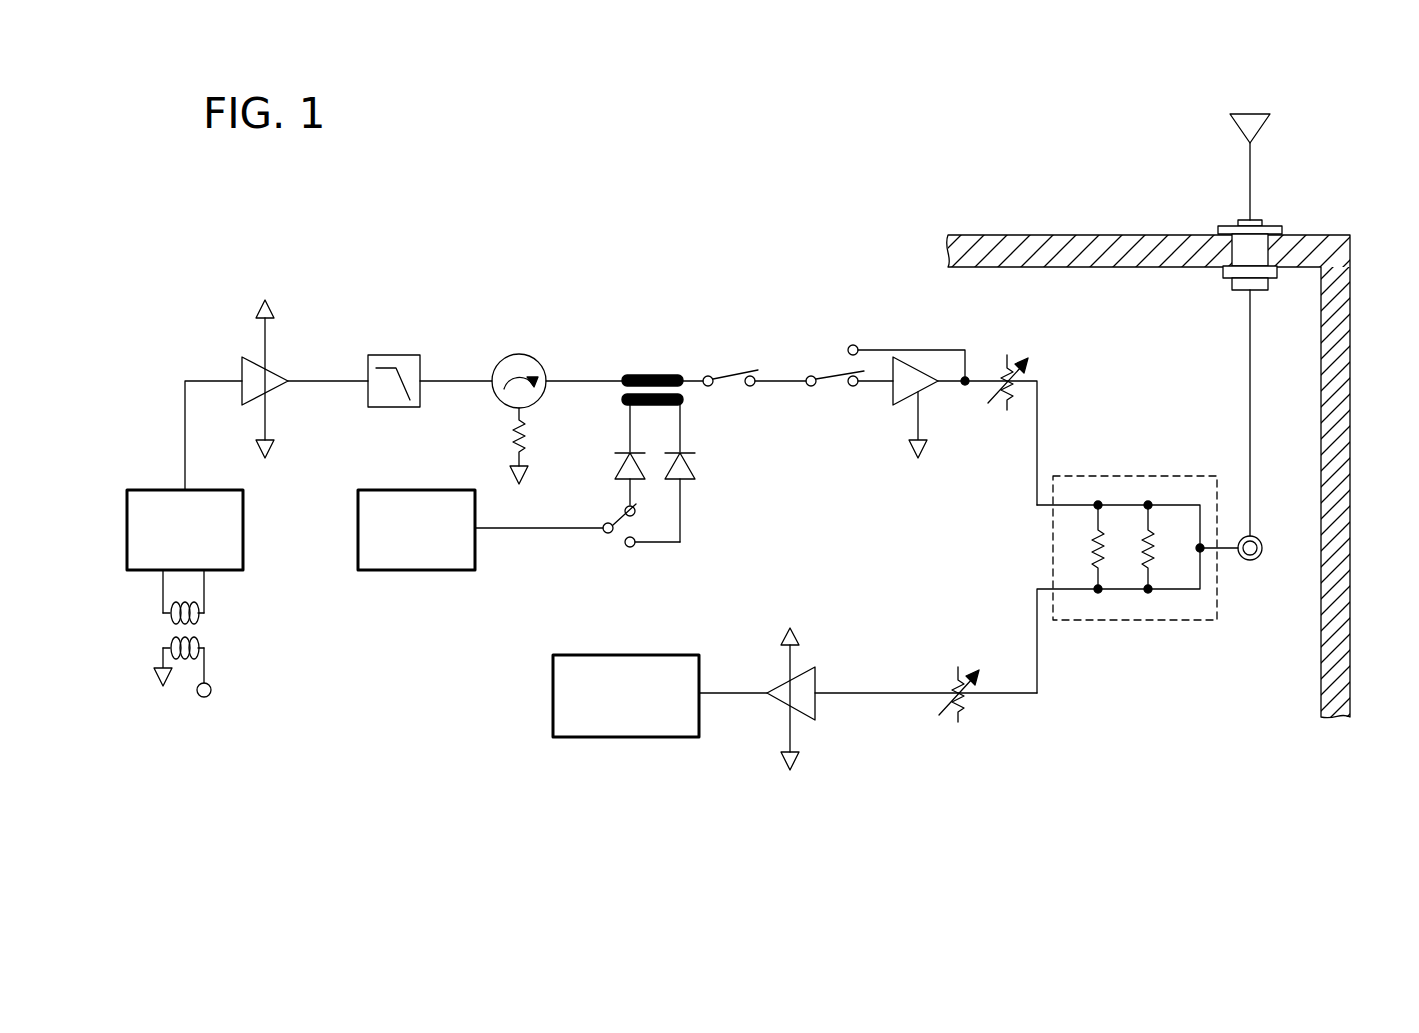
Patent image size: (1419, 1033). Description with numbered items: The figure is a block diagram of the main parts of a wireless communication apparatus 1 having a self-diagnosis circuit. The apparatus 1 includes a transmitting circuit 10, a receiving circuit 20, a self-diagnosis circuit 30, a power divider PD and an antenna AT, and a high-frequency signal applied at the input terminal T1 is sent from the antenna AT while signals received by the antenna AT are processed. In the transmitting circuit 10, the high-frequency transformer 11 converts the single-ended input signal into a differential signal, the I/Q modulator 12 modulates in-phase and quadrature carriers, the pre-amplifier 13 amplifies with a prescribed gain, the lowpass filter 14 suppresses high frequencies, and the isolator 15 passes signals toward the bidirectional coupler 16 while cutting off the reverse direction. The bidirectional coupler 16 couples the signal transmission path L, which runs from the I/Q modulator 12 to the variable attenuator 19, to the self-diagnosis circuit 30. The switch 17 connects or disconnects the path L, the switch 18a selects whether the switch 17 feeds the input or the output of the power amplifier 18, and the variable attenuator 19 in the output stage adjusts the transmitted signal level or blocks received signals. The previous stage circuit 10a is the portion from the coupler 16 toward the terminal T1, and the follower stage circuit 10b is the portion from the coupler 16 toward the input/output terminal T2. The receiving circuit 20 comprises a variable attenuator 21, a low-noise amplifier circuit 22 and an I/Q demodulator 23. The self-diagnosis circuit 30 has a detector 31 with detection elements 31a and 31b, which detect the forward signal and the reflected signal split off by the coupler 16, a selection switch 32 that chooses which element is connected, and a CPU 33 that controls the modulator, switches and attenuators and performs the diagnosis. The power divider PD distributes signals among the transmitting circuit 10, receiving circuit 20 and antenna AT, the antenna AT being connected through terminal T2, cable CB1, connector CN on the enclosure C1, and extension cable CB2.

The wireless communication apparatus 1 is at (973, 114).
The transmitting circuit 10 is at (762, 212).
The previous stage circuit 10a is at (510, 303).
The follower stage circuit 10b is at (774, 303).
The high-frequency transformer 11 is at (207, 624).
The I/Q modulator 12 is at (244, 528).
The pre-amplifier 13 is at (272, 373).
The lowpass filter 14 is at (399, 355).
The isolator 15 is at (529, 357).
The bidirectional coupler 16 is at (649, 376).
The switch 17 is at (745, 372).
The power amplifier 18 is at (926, 393).
The switch 18a is at (831, 363).
The variable attenuator 19 is at (1000, 365).
The receiving circuit 20 is at (872, 740).
The variable attenuator 21 is at (953, 680).
The low-noise amplifier circuit 22 is at (818, 673).
The I/Q demodulator 23 is at (657, 655).
The self-diagnosis circuit 30 is at (530, 575).
The detector 31 is at (670, 478).
The detection element 31a is at (698, 466).
The detection element 31b is at (615, 471).
The selection switch 32 is at (614, 538).
The CPU 33 is at (422, 489).
The signal transmission path L is at (596, 377).
The input terminal T1 is at (204, 698).
The input/output terminal T2 is at (1250, 561).
The antenna AT is at (1268, 131).
The cable CB1 is at (1250, 376).
The extension cable CB2 is at (1258, 184).
The connector CN is at (1229, 224).
The enclosure C1 is at (1340, 498).
The power divider PD is at (1140, 476).